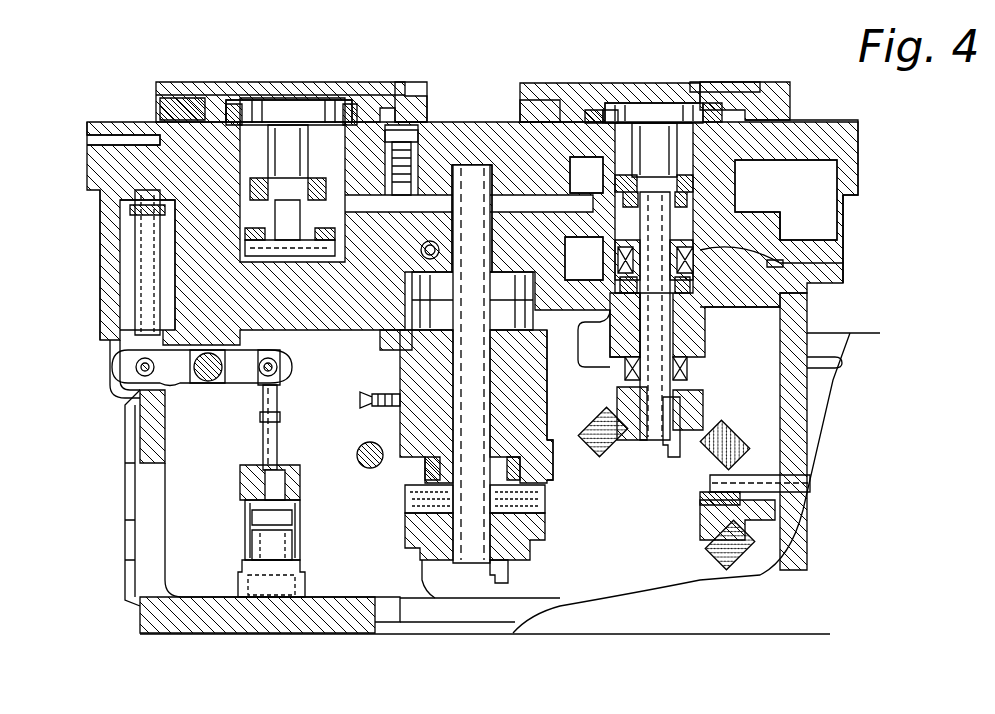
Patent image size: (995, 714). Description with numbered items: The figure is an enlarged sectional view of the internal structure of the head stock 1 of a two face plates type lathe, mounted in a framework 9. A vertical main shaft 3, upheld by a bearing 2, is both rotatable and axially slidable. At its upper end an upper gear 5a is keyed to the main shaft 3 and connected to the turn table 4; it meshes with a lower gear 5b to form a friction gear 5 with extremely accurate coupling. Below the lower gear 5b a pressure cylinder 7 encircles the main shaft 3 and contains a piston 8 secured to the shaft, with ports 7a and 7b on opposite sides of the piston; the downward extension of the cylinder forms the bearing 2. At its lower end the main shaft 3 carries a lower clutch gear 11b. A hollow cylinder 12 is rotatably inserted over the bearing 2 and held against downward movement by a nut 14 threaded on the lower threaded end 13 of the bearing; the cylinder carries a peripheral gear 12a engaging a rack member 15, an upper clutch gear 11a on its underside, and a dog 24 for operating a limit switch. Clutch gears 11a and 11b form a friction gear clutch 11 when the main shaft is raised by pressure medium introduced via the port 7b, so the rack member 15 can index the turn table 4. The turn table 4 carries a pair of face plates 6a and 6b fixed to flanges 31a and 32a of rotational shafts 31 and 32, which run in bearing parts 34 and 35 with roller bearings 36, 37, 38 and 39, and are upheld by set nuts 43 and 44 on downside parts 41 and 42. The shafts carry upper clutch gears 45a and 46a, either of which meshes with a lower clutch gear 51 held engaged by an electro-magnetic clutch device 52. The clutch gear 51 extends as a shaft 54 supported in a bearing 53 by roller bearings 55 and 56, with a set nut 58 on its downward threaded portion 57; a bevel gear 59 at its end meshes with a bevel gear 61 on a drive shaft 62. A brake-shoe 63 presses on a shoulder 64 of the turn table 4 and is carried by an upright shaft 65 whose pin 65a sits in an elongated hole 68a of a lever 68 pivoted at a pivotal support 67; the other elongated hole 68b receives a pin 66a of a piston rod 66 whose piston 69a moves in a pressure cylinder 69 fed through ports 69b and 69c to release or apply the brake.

The head stock 1 is at (826, 612).
The bearing 2 is at (538, 392).
The main shaft 3 is at (477, 220).
The turn table 4 is at (448, 140).
The friction gear 5 is at (612, 150).
The upper gear 5a is at (552, 100).
The lower gear 5b is at (573, 180).
The face plate 6a is at (577, 90).
The face plate 6b is at (327, 92).
The pressure cylinder 7 is at (357, 307).
The port 7a is at (450, 268).
The port 7b is at (598, 362).
The piston 8 is at (372, 350).
The framework 9 is at (843, 260).
The friction gear clutch 11 is at (545, 503).
The upper clutch gear 11a is at (402, 487).
The lower clutch gear 11b is at (402, 510).
The hollow cylinder 12 is at (453, 425).
The peripheral gear 12a is at (548, 445).
The lower threaded end 13 is at (532, 543).
The nut 14 is at (540, 483).
The rack member 15 is at (356, 452).
The dog 24 is at (358, 398).
The rotational shaft 31 is at (653, 133).
The flange 31a is at (702, 102).
The rotational shaft 32 is at (285, 128).
The flange 32a is at (353, 88).
The bearing part 34 is at (735, 110).
The bearing part 35 is at (258, 142).
The roller bearing 36 is at (610, 120).
The roller bearing 37 is at (780, 147).
The roller bearing 38 is at (372, 84).
The roller bearing 39 is at (230, 110).
The downside part 41 is at (780, 212).
The downside part 42 is at (293, 248).
The set nut 43 is at (742, 182).
The set nut 44 is at (140, 292).
The upper clutch gear 45a is at (834, 226).
The upper clutch gear 46a is at (240, 250).
The lower clutch gear 51 is at (808, 303).
The electro-magnetic clutch device 52 is at (712, 292).
The bearing 53 is at (676, 322).
The shaft 54 is at (707, 358).
The roller bearing 55 is at (717, 322).
The roller bearing 56 is at (732, 372).
The downward threaded portion 57 is at (603, 415).
The set nut 58 is at (682, 392).
The bevel gear 59 is at (683, 440).
The bevel gear 61 is at (758, 548).
The drive shaft 62 is at (805, 482).
The brake-shoe 63 is at (120, 212).
The shoulder 64 is at (190, 175).
The upright shaft 65 is at (142, 258).
The pin 65a is at (133, 366).
The piston rod 66 is at (263, 447).
The pin 66a is at (268, 360).
The pivotal support 67 is at (210, 372).
The lever 68 is at (238, 372).
The elongated hole 68a is at (113, 388).
The elongated hole 68b is at (280, 366).
The pressure cylinder 69 is at (244, 532).
The piston 69a is at (244, 512).
The port 69b is at (240, 477).
The port 69c is at (240, 592).